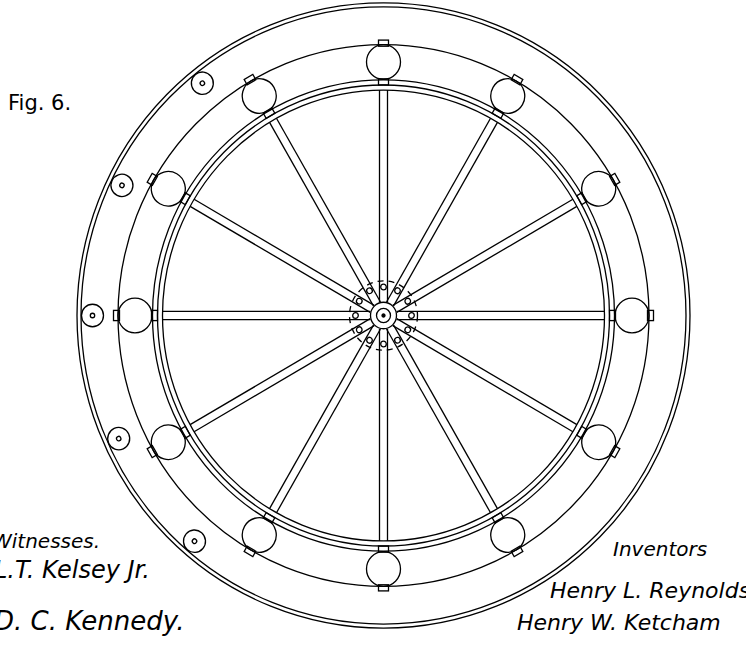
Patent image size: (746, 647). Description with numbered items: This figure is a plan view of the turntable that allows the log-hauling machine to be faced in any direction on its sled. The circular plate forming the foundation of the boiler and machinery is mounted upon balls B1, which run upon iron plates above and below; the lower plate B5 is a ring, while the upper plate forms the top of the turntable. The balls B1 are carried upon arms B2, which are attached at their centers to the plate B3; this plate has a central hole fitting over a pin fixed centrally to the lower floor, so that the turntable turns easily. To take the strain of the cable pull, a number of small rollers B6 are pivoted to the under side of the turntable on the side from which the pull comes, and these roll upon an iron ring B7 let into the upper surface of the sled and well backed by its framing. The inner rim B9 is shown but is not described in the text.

The balls B1 is at (384, 315).
The arms B2 is at (330, 368).
The plate B3 is at (350, 303).
The lower plate B5 is at (118, 357).
The small rollers B6 is at (197, 94).
The iron ring B7 is at (92, 218).
The inner rim B9 is at (168, 253).